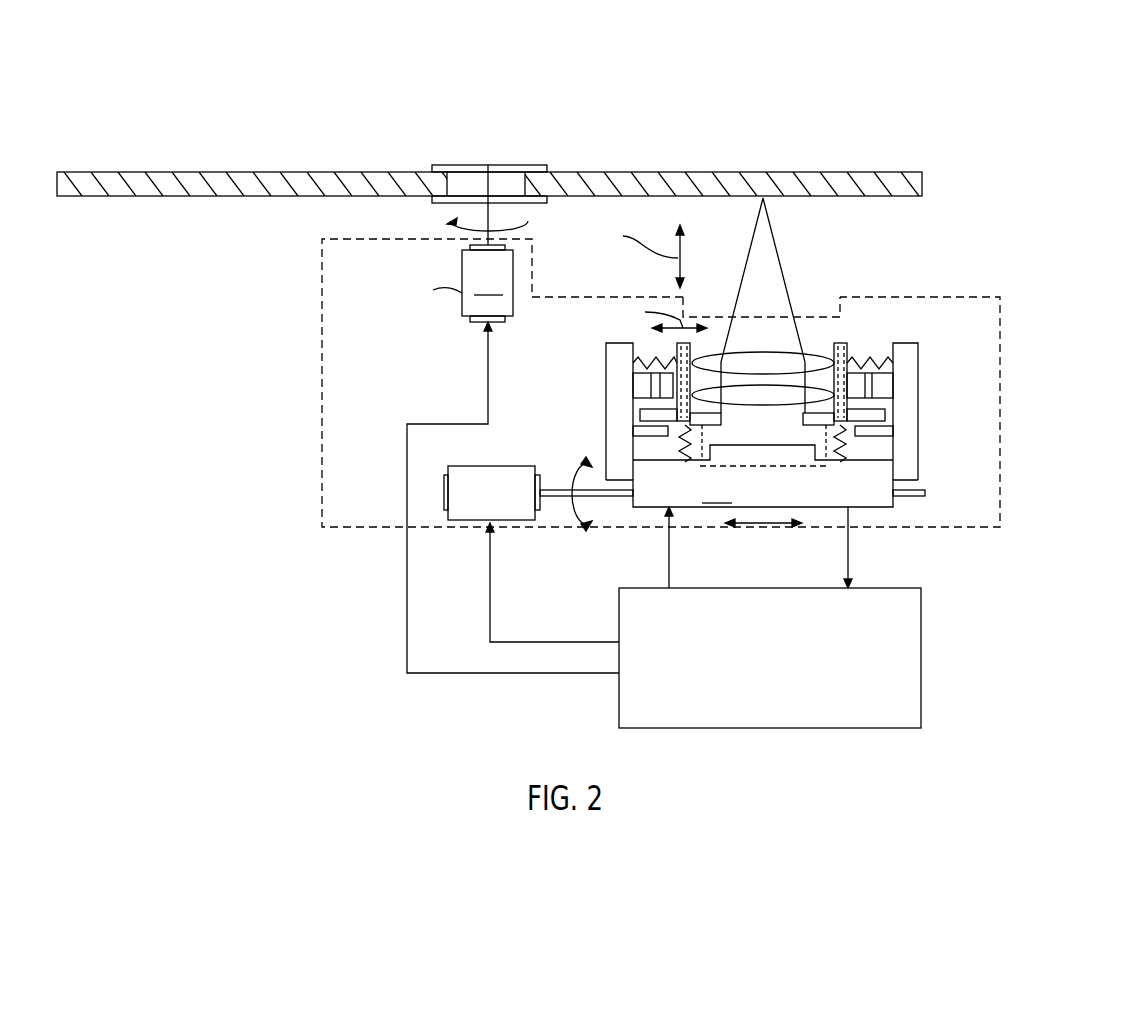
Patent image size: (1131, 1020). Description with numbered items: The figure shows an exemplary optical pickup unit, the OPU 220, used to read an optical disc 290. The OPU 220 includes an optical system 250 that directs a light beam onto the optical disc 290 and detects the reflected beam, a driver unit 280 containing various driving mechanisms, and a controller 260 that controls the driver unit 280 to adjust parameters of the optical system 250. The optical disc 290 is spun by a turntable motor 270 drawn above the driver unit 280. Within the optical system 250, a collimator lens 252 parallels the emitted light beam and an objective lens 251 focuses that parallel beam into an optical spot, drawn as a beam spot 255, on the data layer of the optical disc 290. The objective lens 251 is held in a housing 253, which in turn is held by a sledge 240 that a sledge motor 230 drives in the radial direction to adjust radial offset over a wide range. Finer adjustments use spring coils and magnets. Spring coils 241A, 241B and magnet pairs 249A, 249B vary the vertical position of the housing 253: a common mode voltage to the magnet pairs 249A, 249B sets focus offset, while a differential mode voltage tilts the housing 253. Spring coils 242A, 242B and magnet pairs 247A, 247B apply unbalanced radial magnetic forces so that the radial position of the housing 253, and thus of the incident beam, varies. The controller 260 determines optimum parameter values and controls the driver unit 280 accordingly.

The optical pickup unit 220 is at (284, 89).
The optical disc 290 is at (924, 187).
The turntable motor 270 is at (441, 246).
The driver unit 280 is at (320, 365).
The optical system 250 is at (714, 316).
The beam spot 255 is at (766, 200).
The objective lens 251 is at (806, 352).
The collimator lens 252 is at (784, 408).
The housing 253 is at (895, 403).
The sledge 240 is at (765, 493).
The sledge motor 230 is at (525, 521).
The controller 260 is at (922, 672).
The spring coil 242A is at (650, 358).
The spring coil 242B is at (875, 357).
The magnet pair 247A is at (637, 386).
The magnet pair 247B is at (880, 383).
The magnet pair 249A is at (636, 430).
The magnet pair 249B is at (880, 432).
The spring coil 241A is at (680, 447).
The spring coil 241B is at (880, 447).